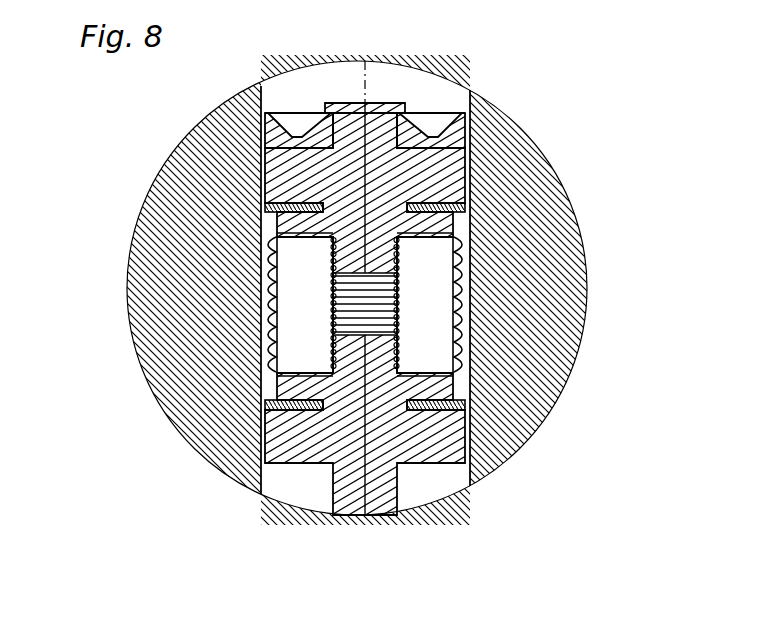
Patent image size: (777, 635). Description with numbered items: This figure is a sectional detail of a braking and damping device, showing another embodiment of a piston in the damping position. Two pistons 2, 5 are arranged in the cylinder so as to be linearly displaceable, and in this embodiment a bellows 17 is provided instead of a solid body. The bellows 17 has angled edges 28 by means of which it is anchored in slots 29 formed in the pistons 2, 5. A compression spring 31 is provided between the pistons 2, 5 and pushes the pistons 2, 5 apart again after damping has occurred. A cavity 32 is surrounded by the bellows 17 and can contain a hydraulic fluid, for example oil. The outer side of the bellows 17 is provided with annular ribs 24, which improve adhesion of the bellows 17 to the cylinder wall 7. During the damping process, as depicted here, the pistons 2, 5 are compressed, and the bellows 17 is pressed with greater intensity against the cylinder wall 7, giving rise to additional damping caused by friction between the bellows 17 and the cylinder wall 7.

The piston 2 is at (277, 422).
The piston 5 is at (280, 168).
The cylinder wall 7 is at (260, 482).
The bellows 17 is at (472, 282).
The annular ribs 24 is at (470, 252).
The angled edges 28 is at (443, 197).
The slots 29 is at (423, 193).
The compression spring 31 is at (393, 325).
The cavity 32 is at (298, 277).